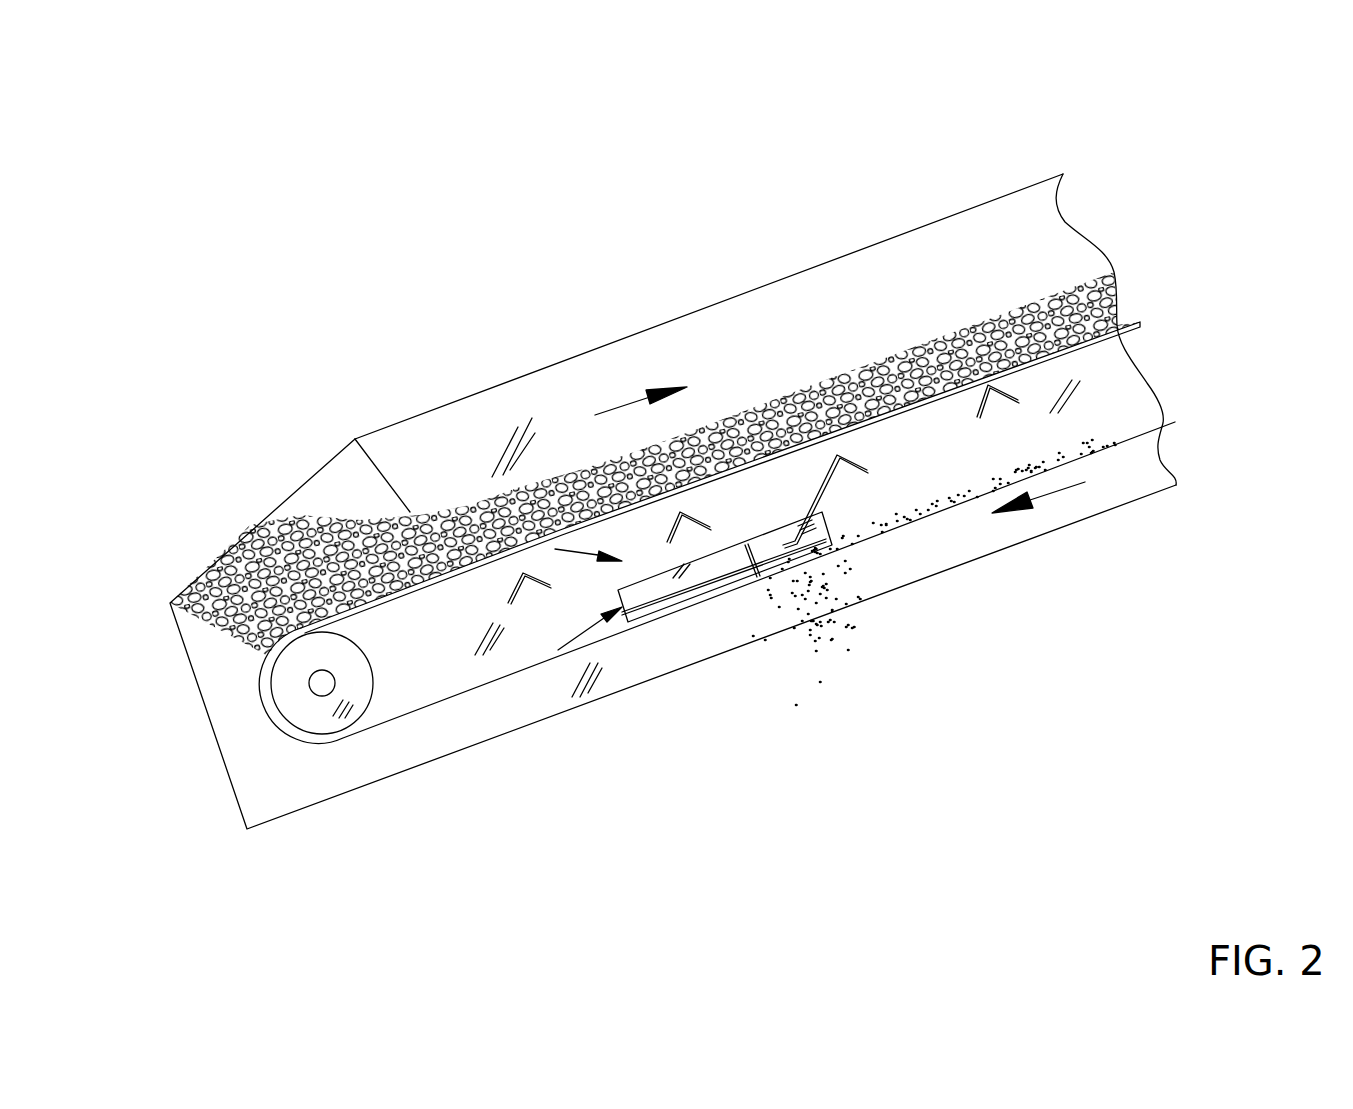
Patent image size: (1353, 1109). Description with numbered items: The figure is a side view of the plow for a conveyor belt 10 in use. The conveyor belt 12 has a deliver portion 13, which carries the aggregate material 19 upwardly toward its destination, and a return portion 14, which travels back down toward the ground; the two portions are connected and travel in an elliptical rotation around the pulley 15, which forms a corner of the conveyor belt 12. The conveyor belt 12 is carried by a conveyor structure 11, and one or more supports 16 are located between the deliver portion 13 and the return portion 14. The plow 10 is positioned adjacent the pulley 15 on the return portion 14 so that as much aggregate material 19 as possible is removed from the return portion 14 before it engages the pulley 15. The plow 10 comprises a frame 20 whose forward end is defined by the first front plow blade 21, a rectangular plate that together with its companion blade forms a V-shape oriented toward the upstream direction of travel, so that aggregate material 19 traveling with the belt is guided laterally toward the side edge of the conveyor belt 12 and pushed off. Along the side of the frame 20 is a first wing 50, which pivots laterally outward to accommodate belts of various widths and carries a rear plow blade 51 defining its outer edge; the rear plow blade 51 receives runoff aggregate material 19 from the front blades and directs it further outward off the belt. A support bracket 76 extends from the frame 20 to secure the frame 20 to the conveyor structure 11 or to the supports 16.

The plow for a conveyor belt 10 is at (175, 168).
The conveyor structure 11 is at (677, 350).
The conveyor belt 12 is at (1142, 322).
The deliver portion 13 is at (452, 577).
The return portion 14 is at (712, 582).
The pulley 15 is at (290, 708).
The supports 16 is at (582, 480).
The aggregate material 19 is at (255, 524).
The frame 20 is at (500, 510).
The first front plow blade 21 is at (800, 550).
The first wing 50 is at (558, 650).
The rear plow blade 51 is at (643, 607).
The support bracket 76 is at (813, 495).